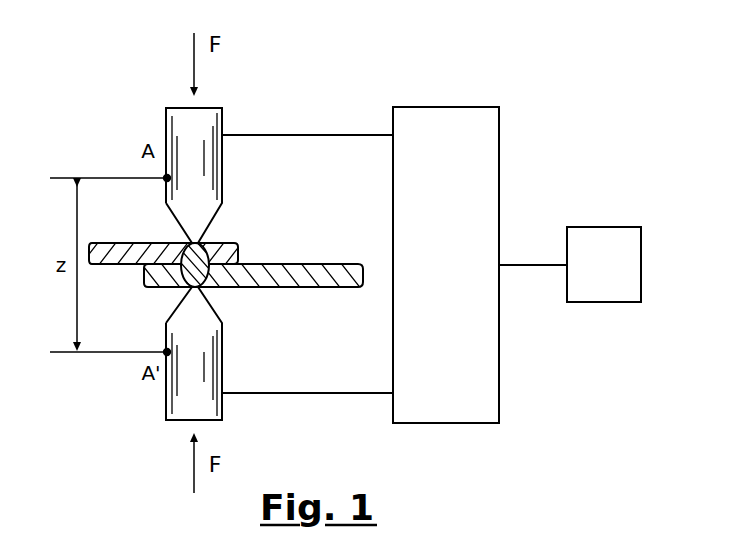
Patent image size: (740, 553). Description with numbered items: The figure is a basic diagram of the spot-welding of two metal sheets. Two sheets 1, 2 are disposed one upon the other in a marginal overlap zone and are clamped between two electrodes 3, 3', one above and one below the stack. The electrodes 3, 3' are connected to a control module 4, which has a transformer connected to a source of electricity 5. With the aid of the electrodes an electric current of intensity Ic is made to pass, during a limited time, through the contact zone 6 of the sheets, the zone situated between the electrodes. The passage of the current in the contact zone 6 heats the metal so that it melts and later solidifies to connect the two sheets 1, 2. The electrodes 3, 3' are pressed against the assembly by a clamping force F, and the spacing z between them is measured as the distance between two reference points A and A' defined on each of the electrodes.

The sheet 1 is at (125, 266).
The sheet 2 is at (302, 263).
The electrode 3 is at (215, 160).
The electrode 3' is at (172, 354).
The control module 4 is at (499, 363).
The source of electricity 5 is at (612, 302).
The contact zone 6 is at (213, 242).